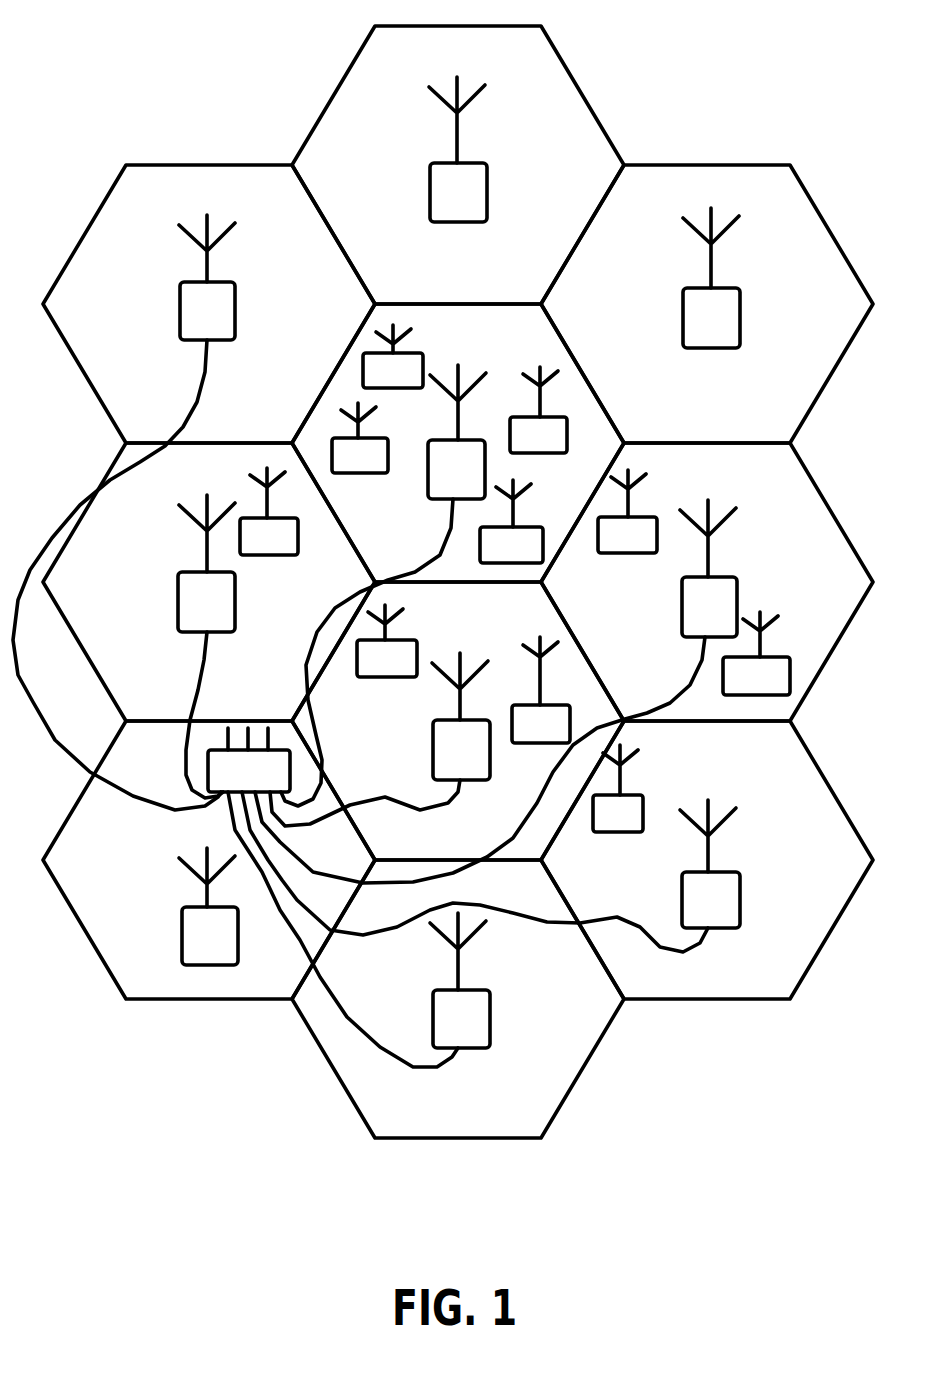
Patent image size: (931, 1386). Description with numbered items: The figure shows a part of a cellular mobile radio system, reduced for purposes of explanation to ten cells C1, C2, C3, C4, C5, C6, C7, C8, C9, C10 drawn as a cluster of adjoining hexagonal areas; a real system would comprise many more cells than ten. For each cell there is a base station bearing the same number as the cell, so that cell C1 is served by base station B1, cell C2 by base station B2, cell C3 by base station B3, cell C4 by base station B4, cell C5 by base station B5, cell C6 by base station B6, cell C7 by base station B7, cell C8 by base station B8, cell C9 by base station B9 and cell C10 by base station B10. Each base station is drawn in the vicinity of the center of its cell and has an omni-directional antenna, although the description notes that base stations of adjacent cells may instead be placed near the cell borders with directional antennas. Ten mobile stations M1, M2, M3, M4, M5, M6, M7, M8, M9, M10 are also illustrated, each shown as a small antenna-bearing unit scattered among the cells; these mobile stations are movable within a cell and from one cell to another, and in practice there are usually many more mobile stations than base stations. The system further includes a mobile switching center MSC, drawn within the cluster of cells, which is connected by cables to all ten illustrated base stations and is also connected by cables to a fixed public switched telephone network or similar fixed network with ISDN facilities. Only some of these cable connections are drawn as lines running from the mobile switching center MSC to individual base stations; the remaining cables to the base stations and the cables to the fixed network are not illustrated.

The base station B1 is at (383, 585).
The base station B2 is at (711, 278).
The base station B3 is at (496, 691).
The base station B4 is at (380, 739).
The base station B5 is at (206, 646).
The base station B6 is at (124, 512).
The base station B7 is at (458, 149).
The base station B8 is at (491, 872).
The base station B9 is at (359, 929).
The base station B10 is at (208, 906).
The mobile station M1 is at (618, 788).
The mobile station M2 is at (269, 511).
The mobile station M3 is at (360, 439).
The mobile station M4 is at (538, 410).
The mobile station M5 is at (627, 512).
The mobile station M6 is at (393, 357).
The mobile station M7 is at (511, 522).
The mobile station M8 is at (541, 690).
The mobile station M9 is at (387, 641).
The mobile station M10 is at (756, 653).
The cell C1 is at (400, 560).
The cell C2 is at (668, 427).
The cell C3 is at (665, 697).
The cell C4 is at (412, 845).
The cell C5 is at (162, 697).
The cell C6 is at (163, 417).
The cell C7 is at (413, 285).
The cell C8 is at (657, 972).
The cell C9 is at (405, 1103).
The cell C10 is at (153, 952).
The mobile switching center MSC is at (249, 760).